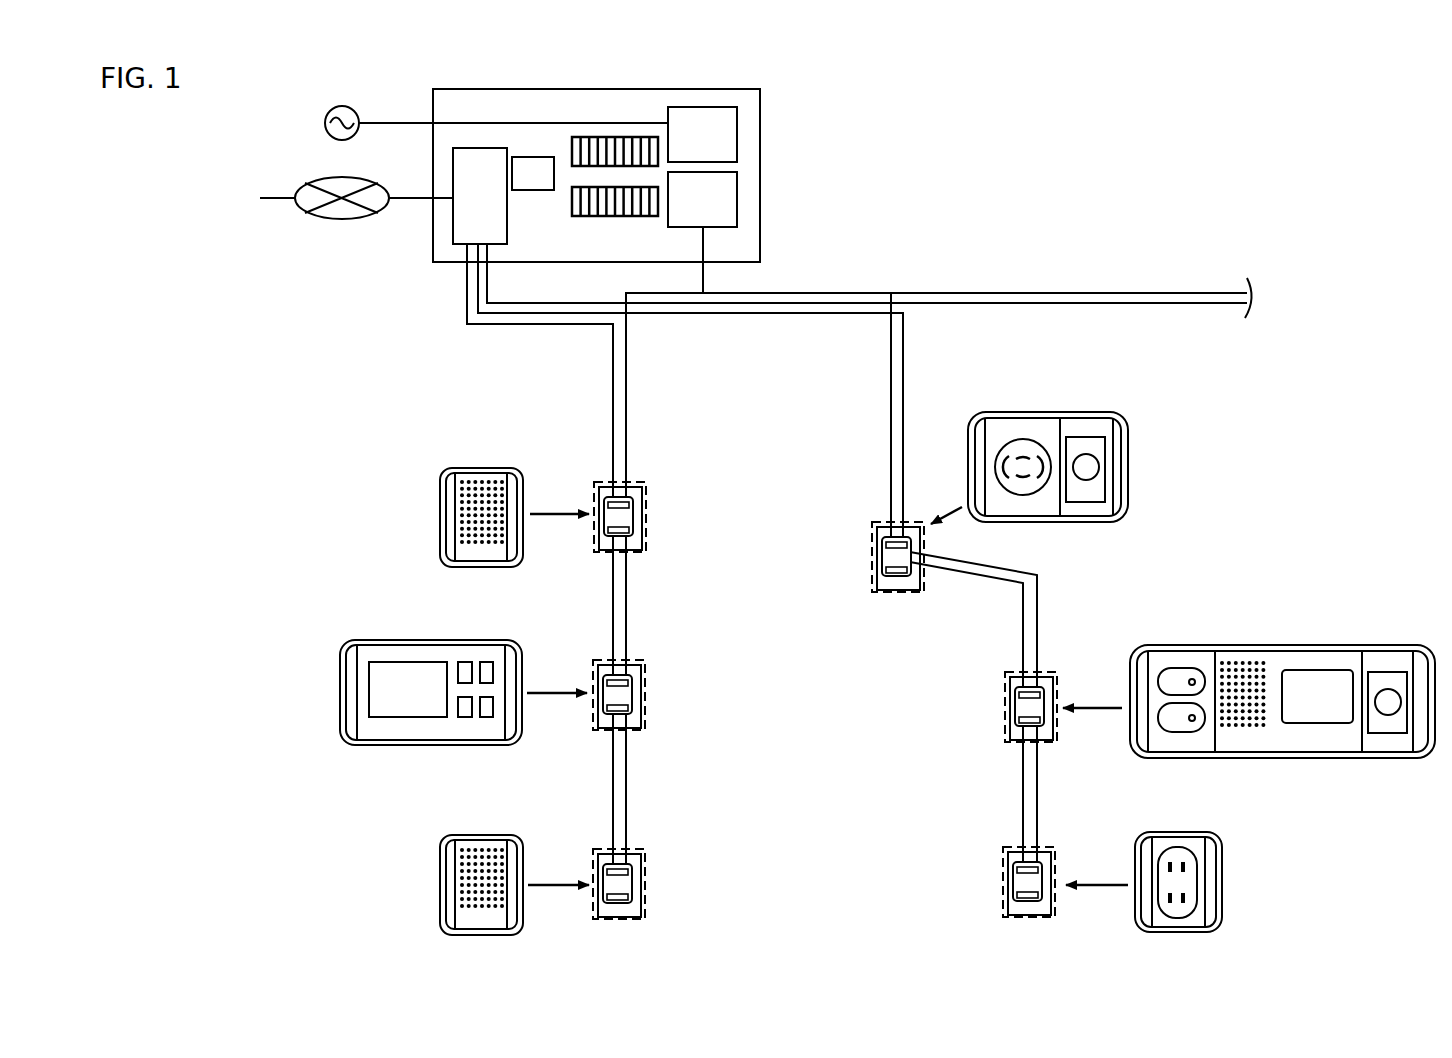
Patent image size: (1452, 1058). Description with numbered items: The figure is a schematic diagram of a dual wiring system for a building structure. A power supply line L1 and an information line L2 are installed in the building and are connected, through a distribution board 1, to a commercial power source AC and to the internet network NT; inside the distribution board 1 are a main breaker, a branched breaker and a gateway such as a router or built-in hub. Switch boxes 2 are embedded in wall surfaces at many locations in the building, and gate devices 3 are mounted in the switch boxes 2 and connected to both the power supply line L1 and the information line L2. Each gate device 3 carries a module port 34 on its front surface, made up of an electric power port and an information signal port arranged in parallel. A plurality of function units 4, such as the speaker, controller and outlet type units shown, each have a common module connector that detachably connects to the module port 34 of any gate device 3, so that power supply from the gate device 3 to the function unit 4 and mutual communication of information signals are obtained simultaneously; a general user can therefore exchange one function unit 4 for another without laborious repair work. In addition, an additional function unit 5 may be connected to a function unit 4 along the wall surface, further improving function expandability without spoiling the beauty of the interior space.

The distribution board 1 is at (760, 212).
The switch box 2 is at (825, 695).
The gate device 3 is at (825, 694).
The module port 34 is at (632, 517).
The function unit 4 is at (887, 639).
The additional function unit 5 is at (1092, 412).
The power supply line L1 is at (1070, 292).
The information line L2 is at (1135, 303).
The commercial power source AC is at (474, 123).
The internet network NT is at (332, 219).